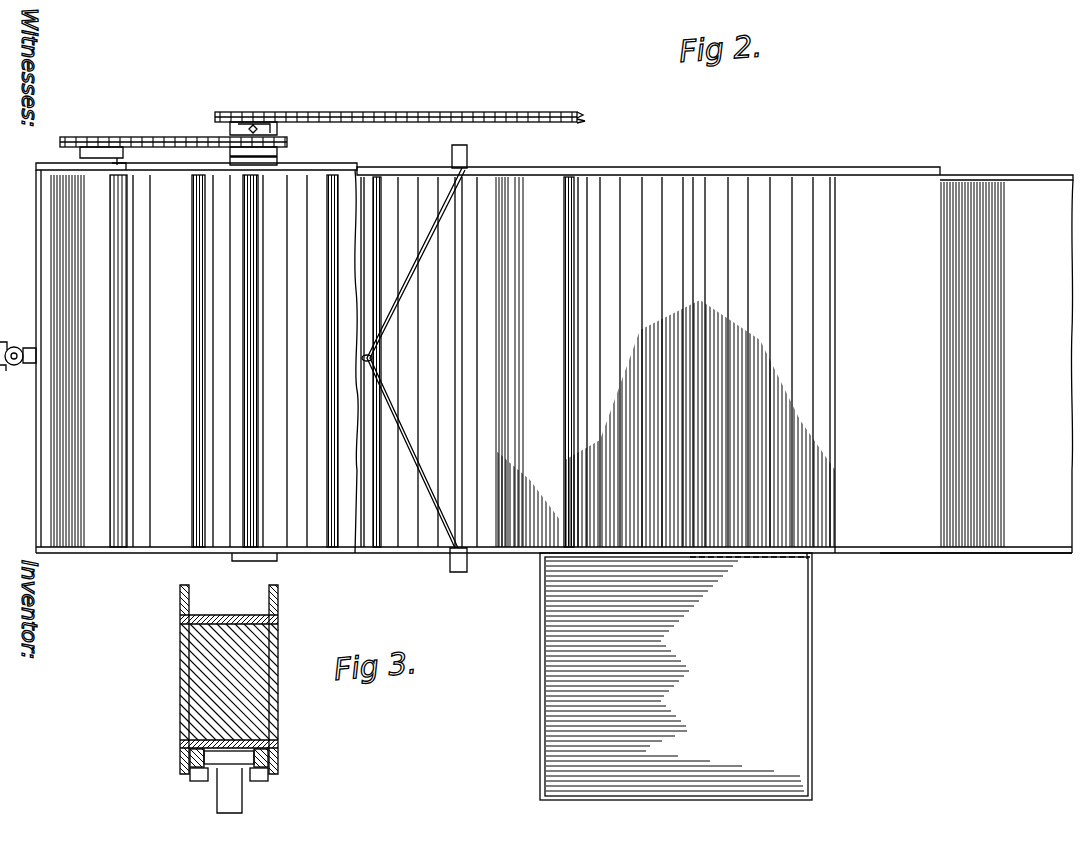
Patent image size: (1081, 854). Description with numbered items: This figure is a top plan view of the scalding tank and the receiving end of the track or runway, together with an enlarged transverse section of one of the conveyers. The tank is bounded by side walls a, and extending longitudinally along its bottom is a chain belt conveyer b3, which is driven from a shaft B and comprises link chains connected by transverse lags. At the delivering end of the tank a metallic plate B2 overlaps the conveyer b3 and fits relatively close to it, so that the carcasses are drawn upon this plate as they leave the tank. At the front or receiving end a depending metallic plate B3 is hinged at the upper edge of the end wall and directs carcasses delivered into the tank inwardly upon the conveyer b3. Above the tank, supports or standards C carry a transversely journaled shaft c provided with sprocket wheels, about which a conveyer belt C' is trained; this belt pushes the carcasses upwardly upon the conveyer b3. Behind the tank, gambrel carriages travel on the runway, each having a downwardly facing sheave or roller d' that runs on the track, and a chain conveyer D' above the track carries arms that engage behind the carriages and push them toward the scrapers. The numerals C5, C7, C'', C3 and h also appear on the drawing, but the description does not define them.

In FIG. 2, the shaft B is at (80, 153).
In FIG. 2, the shaft c is at (173, 151).
In FIG. 2, the supports or standards C is at (400, 138).
In FIG. 2, the brace rod C5 is at (441, 182).
In FIG. 2, the side walls a is at (809, 169).
In FIG. 2, the chain belt conveyer b3 is at (803, 273).
In FIG. 2, the cross bar C7 is at (487, 401).
In FIG. 2, the metallic plate B2 is at (979, 366).
In FIG. 2, the depending metallic plate B3 is at (70, 416).
In FIG. 2, the conveyer belt C' is at (238, 565).
In FIG. 2, the partition C'' is at (344, 379).
In FIG. 2, the brace foot C3 is at (456, 576).
In FIG. 2, the bottom rail h is at (976, 570).
In FIG. 2, the sheave or roller d' is at (691, 676).
In FIG. 3, the sheave or roller d' is at (247, 792).
In FIG. 3, the chain conveyer D' is at (257, 683).